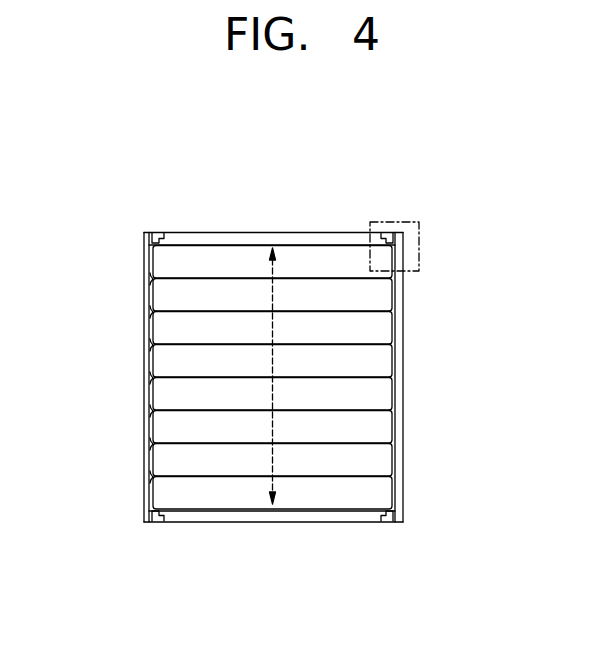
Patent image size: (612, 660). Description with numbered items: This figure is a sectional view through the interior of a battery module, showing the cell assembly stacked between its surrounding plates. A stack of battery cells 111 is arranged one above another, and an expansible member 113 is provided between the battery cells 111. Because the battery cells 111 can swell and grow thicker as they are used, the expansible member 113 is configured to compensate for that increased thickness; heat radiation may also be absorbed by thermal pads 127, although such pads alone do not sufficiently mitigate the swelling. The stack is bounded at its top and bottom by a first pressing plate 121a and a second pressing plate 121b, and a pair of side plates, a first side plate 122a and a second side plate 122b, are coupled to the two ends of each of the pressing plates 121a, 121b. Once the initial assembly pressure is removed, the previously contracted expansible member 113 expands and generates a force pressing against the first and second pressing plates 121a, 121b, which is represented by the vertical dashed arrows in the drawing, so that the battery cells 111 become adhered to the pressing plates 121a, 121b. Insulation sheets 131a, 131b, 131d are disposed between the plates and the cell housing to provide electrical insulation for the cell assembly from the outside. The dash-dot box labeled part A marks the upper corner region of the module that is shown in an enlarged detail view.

The battery cell 111 is at (383, 300).
The expansible member 113 is at (383, 278).
The first pressing plate 121a is at (262, 240).
The second pressing plate 121b is at (270, 523).
The first side plate 122a is at (398, 380).
The second side plate 122b is at (150, 381).
The thermal pad 127 is at (158, 312).
The insulation sheet 131a is at (323, 245).
The insulation sheet 131b is at (322, 512).
The insulation sheet 131d is at (392, 342).
The part A is at (397, 213).